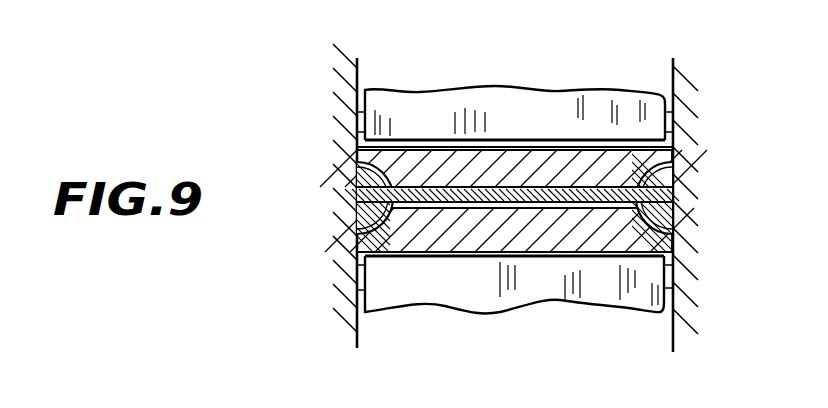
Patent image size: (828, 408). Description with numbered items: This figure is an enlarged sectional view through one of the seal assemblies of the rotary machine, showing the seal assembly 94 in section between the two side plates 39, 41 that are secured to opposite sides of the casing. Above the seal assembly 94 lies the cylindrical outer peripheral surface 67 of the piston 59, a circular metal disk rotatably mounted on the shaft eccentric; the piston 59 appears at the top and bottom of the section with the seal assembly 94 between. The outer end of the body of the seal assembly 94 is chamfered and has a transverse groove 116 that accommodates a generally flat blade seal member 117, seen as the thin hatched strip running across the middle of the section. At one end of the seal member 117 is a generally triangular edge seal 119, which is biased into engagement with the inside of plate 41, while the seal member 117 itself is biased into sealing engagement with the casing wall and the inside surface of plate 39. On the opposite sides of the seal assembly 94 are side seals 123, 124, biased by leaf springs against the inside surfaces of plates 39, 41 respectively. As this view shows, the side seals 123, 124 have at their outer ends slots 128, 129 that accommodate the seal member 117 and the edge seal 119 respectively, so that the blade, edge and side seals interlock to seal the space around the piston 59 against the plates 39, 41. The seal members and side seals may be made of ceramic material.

The plate 39 is at (348, 73).
The plate 41 is at (694, 94).
The cylindrical outer peripheral surface 67 is at (596, 102).
The seal assembly 94 is at (437, 160).
The transverse groove 116 is at (429, 212).
The blade seal member 117 is at (368, 196).
The edge seal 119 is at (672, 201).
The side seal 123 is at (368, 178).
The side seal 124 is at (668, 180).
The slot 128 is at (370, 224).
The slot 129 is at (669, 228).
The piston 59 is at (545, 312).